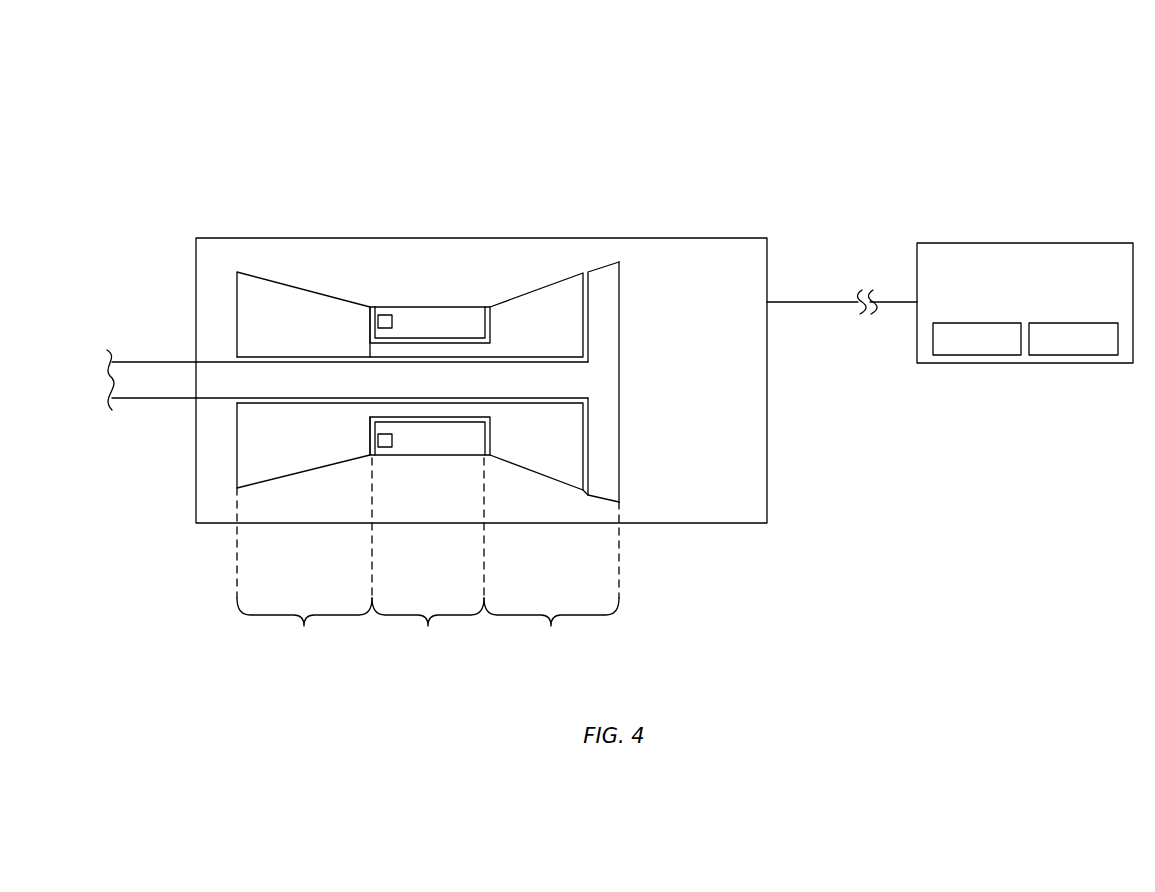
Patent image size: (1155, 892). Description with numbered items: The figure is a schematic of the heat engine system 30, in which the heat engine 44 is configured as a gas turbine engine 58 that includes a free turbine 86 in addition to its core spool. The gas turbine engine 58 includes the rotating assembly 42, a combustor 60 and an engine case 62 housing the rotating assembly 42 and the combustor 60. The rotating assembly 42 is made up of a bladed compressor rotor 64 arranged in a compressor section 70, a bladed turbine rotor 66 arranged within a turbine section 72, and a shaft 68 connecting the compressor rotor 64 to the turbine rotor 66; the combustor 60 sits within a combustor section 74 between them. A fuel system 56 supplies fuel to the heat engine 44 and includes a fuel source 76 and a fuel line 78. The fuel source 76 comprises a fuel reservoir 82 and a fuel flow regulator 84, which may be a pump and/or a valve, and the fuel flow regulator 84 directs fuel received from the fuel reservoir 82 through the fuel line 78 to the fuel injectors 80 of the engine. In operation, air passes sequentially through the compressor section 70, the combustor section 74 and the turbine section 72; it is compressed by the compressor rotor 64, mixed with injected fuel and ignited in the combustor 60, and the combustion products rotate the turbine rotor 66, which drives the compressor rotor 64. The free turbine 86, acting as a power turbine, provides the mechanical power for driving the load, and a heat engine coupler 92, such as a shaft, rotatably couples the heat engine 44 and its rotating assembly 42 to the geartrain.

The heat engine system 30 is at (196, 191).
The rotating assembly 42 is at (228, 455).
The heat engine 44 is at (619, 233).
The gas turbine engine 58 is at (693, 382).
The fuel system 56 is at (875, 237).
The combustor 60 is at (455, 305).
The engine case 62 is at (417, 238).
The bladed compressor rotor 64 is at (237, 312).
The bladed turbine rotor 66 is at (588, 455).
The shaft 68 is at (400, 350).
The compressor section 70 is at (304, 573).
The turbine section 72 is at (551, 558).
The combustor section 74 is at (428, 558).
The fuel source 76 is at (1018, 367).
The fuel line 78 is at (810, 303).
The fuel injector 80 is at (383, 310).
The fuel reservoir 82 is at (955, 356).
The fuel flow regulator 84 is at (1093, 356).
The free turbine 86 is at (600, 498).
The heat engine coupler 92 is at (135, 399).